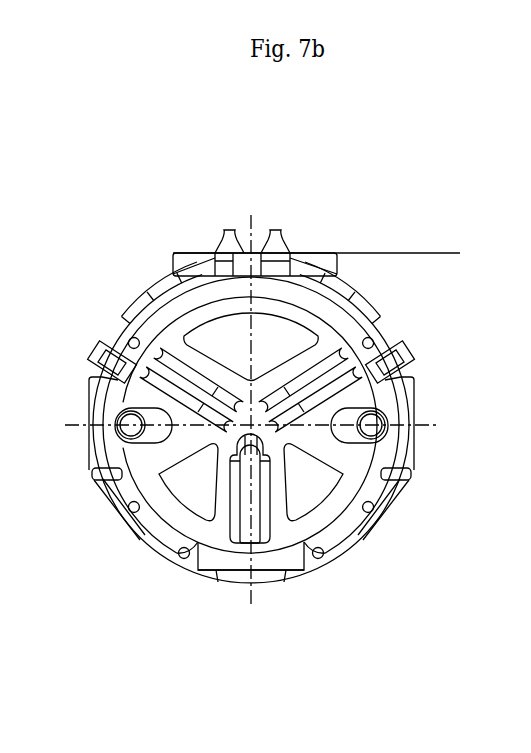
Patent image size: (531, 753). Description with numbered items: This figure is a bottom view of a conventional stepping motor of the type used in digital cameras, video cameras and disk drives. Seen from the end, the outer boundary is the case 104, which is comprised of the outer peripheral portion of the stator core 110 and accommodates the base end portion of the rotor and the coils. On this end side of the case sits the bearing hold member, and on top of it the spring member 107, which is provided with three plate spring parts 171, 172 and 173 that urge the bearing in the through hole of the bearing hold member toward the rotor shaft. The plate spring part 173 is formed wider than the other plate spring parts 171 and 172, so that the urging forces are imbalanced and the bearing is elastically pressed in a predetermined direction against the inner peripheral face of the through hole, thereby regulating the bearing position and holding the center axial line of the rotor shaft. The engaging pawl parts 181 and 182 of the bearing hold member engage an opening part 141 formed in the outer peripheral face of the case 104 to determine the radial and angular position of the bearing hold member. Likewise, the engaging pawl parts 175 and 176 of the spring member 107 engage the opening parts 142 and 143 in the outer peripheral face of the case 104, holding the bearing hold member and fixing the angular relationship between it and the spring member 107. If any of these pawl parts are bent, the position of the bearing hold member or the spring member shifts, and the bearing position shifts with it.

The engaging pawl part 181 is at (171, 278).
The engaging pawl part 182 is at (338, 278).
The opening part 141 is at (282, 280).
The plate spring part 171 is at (152, 370).
The plate spring part 172 is at (310, 387).
The engaging pawl part 175 is at (95, 408).
The engaging pawl part 176 is at (417, 445).
The opening part 142 is at (90, 470).
The opening part 143 is at (412, 473).
The spring member 107 is at (164, 519).
The plate spring part 173 is at (262, 497).
The case 104 is at (183, 563).
The stator core 110 is at (251, 619).